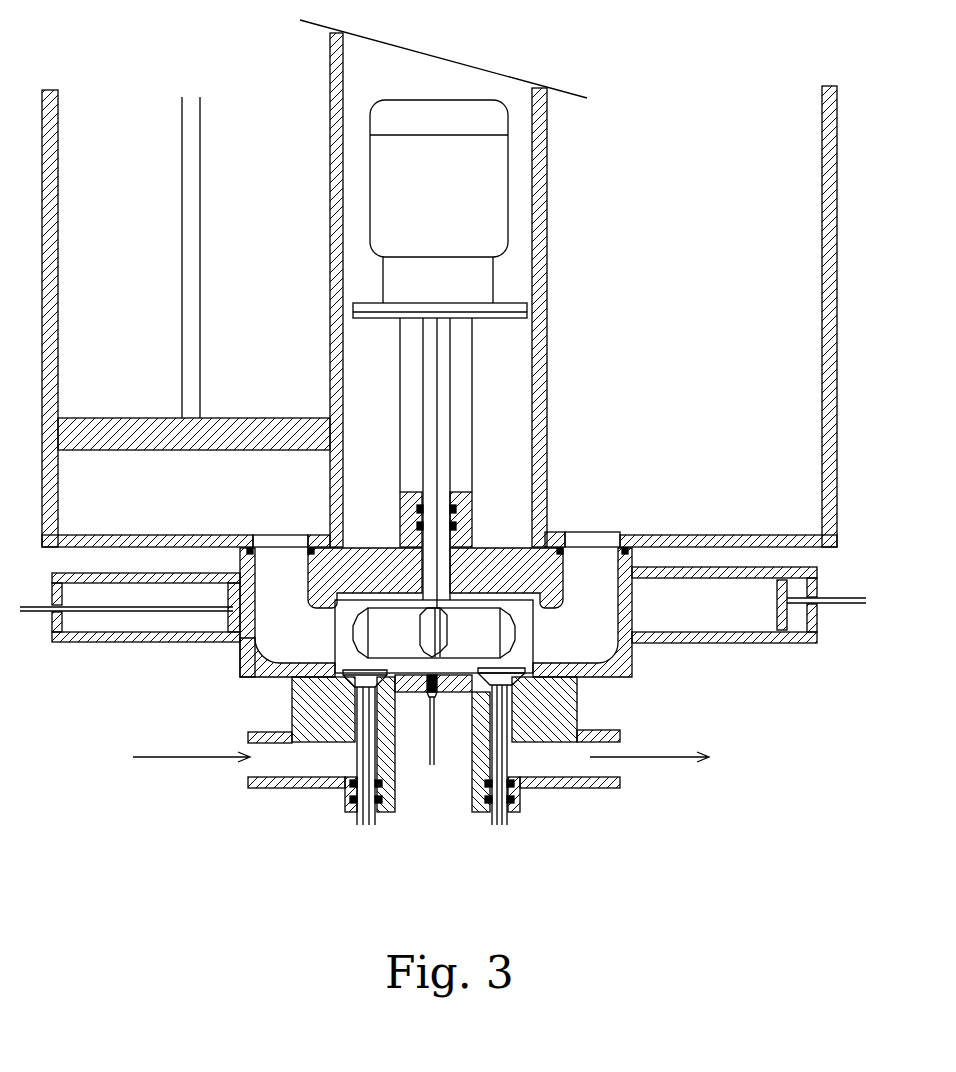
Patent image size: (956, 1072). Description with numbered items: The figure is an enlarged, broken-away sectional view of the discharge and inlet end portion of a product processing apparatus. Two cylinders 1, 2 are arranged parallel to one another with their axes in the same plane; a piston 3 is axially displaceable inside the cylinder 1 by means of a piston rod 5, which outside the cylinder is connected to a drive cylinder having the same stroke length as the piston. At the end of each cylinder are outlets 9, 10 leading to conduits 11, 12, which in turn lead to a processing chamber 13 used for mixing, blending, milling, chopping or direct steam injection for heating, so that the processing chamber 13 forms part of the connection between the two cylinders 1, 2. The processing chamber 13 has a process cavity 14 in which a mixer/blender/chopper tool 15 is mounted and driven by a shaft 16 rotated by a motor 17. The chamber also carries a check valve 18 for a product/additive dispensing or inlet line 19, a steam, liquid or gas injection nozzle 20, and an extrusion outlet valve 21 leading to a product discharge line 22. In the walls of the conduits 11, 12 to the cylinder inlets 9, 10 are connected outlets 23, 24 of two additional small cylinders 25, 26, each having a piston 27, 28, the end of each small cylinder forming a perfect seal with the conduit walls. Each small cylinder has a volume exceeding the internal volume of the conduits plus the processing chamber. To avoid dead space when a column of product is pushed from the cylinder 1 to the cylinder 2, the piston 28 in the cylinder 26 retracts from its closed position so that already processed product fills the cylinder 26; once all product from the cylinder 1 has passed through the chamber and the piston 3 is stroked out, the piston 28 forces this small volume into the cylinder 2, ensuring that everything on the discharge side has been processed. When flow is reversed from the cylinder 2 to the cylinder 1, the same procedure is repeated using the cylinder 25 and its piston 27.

The cylinder 1 is at (55, 287).
The cylinder 2 is at (826, 257).
The piston 3 is at (267, 428).
The piston rod 5 is at (190, 182).
The outlet 9 is at (283, 543).
The outlet 10 is at (588, 530).
The conduit 11 is at (288, 747).
The conduit 12 is at (583, 618).
The processing chamber 13 is at (333, 630).
The process cavity 14 is at (546, 527).
The mixer/blender/chopper tool 15 is at (487, 540).
The shaft 16 is at (440, 404).
The motor 17 is at (407, 157).
The check valve 18 is at (398, 713).
The product/additive dispensing or inlet line 19 is at (308, 762).
The injection nozzle 20 is at (435, 738).
The extrusion outlet valve 21 is at (533, 743).
The product discharge line 22 is at (549, 765).
The outlet 23 is at (230, 643).
The outlet 24 is at (627, 598).
The small cylinder 25 is at (80, 645).
The small cylinder 26 is at (752, 640).
The piston 27 is at (190, 643).
The piston 28 is at (805, 612).